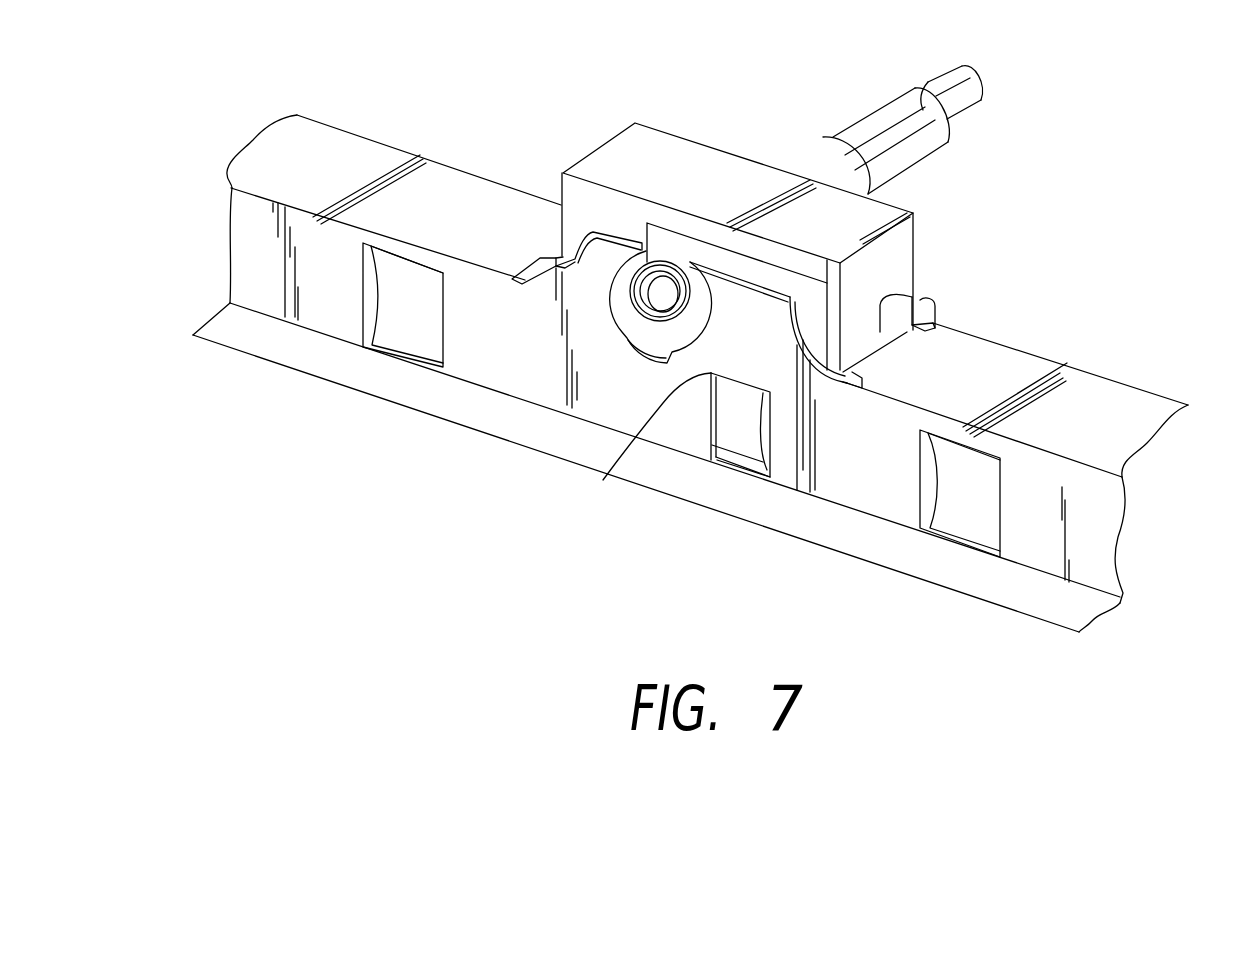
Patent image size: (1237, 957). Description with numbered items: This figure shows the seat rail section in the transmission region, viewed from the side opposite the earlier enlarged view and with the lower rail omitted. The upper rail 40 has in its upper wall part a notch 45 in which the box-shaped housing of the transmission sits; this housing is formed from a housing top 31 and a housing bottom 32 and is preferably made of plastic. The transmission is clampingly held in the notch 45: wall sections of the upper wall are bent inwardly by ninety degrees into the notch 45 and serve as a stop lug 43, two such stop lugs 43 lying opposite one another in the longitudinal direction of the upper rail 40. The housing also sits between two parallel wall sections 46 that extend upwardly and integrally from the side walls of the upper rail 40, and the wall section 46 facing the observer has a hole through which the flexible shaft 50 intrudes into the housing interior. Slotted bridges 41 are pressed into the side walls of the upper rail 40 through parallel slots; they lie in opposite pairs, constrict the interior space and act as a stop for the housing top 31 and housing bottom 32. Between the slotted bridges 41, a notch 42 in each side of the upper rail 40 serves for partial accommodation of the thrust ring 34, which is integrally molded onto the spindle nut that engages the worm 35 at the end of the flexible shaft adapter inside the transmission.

The housing top 31 is at (913, 213).
The housing bottom 32 is at (618, 132).
The thrust ring 34 is at (734, 465).
The worm 35 is at (657, 273).
The upper rail 40 is at (1098, 373).
The slotted bridge 41 is at (392, 347).
The notch 42 is at (603, 480).
The stop lug 43 is at (549, 258).
The notch 45 is at (927, 318).
The wall section 46 is at (717, 277).
The flexible shaft 50 is at (887, 105).